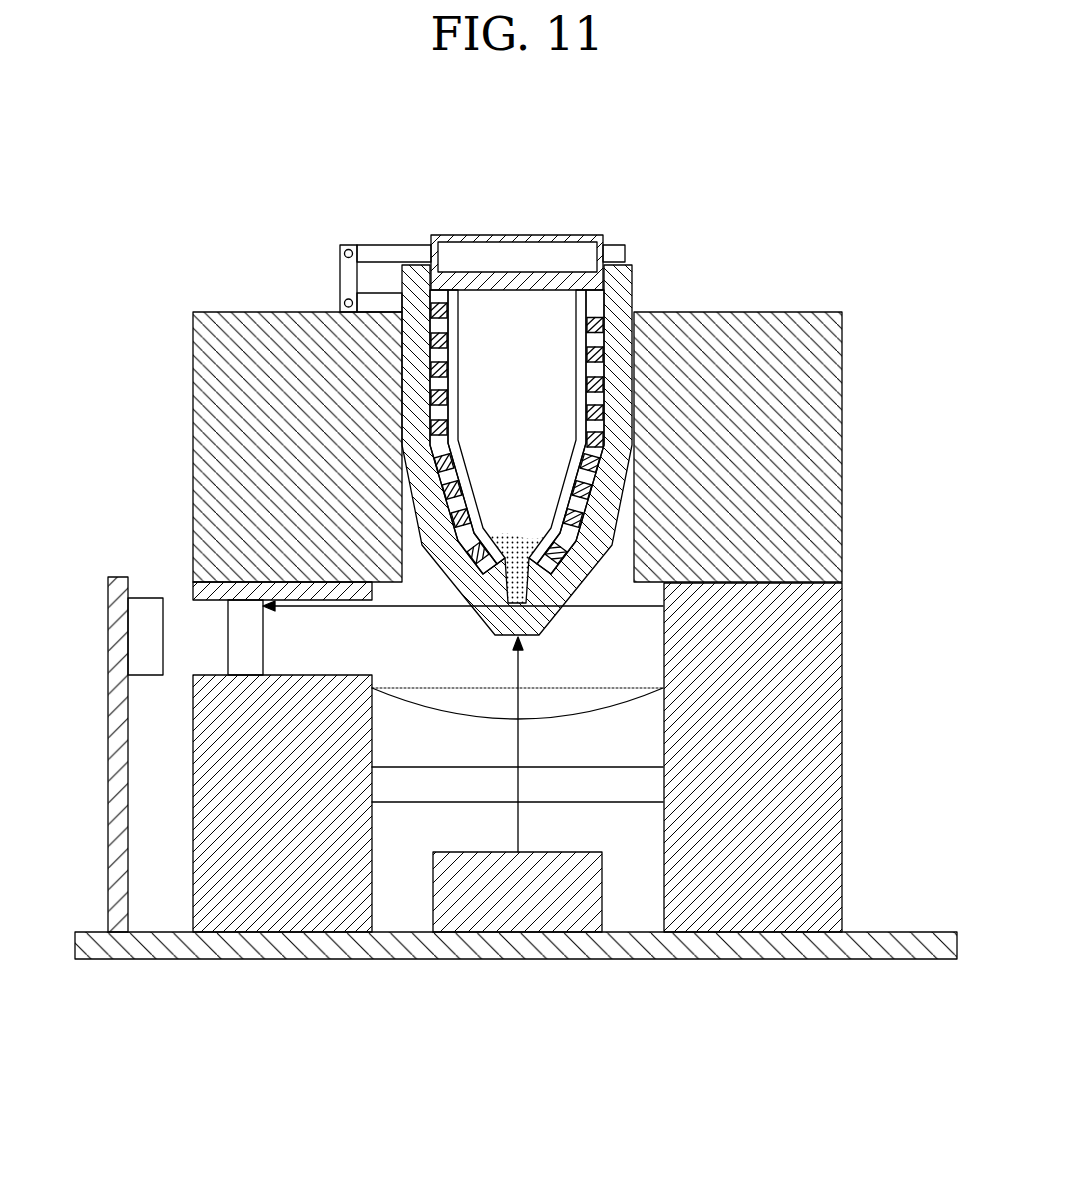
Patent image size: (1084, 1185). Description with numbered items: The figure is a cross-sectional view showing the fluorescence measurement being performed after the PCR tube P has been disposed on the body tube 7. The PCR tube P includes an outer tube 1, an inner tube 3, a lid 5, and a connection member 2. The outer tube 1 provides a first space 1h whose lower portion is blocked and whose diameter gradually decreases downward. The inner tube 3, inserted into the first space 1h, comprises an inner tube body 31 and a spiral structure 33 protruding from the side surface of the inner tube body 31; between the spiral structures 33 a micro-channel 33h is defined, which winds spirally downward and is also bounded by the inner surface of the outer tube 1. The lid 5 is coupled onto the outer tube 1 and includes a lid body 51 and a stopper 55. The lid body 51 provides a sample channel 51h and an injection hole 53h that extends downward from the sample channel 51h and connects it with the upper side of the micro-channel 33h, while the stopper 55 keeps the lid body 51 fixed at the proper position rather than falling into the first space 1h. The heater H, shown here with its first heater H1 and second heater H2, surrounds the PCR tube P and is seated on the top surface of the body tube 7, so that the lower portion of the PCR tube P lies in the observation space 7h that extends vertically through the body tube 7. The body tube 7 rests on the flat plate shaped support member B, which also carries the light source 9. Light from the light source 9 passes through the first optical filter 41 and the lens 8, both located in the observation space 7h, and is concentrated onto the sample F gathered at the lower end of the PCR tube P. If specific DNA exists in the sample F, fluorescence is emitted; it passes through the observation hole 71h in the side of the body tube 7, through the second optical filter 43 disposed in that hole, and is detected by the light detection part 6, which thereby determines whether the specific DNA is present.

The outer tube 1 is at (433, 522).
The first space 1h is at (505, 492).
The connection member 2 is at (344, 280).
The inner tube 3 is at (530, 450).
The inner tube body 31 is at (580, 325).
The spiral structure 33 is at (600, 380).
The micro-channel 33h is at (440, 327).
The lid 5 is at (515, 211).
The lid body 51 is at (540, 240).
The sample channel 51h is at (492, 252).
The injection hole 53h is at (423, 234).
The stopper 55 is at (613, 255).
The light detection part 6 is at (140, 664).
The body tube 7 is at (830, 700).
The observation space 7h is at (630, 665).
The observation hole 71h is at (210, 600).
The lens 8 is at (607, 698).
The light source 9 is at (577, 890).
The first optical filter 41 is at (628, 788).
The second optical filter 43 is at (248, 640).
The support member B is at (514, 959).
The sample F is at (537, 583).
The heater H is at (520, 396).
The first heater H1 is at (205, 450).
The second heater H2 is at (830, 451).
The PCR tube P is at (530, 366).